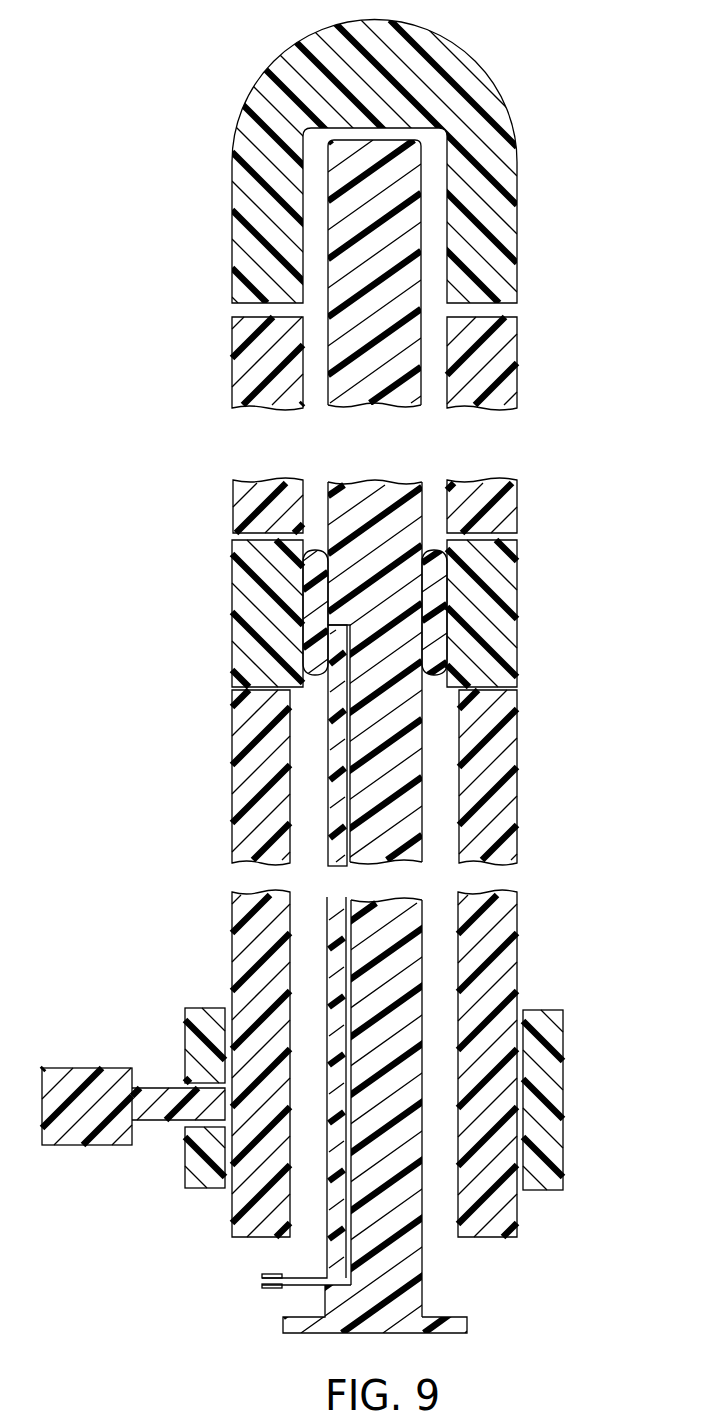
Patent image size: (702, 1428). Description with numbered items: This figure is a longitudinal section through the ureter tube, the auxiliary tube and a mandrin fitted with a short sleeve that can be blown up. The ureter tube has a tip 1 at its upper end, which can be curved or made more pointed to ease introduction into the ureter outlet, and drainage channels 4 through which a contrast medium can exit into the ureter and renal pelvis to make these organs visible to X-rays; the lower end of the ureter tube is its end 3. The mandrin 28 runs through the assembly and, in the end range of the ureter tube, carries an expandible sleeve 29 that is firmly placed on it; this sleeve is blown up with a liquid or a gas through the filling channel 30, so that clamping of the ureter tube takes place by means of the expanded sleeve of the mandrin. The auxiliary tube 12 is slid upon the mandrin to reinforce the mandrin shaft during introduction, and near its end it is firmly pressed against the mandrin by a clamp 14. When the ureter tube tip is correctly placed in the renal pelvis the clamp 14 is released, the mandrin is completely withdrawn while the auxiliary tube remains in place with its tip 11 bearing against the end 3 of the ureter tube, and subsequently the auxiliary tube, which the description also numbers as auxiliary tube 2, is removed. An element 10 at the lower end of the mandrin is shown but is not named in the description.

The ureter tube tip 1 is at (397, 17).
The auxiliary tube 2 is at (232, 352).
The end of the ureter tube 3 is at (232, 595).
The drainage channels 4 is at (508, 312).
The base plate 10 is at (463, 1328).
The tip of the auxiliary tube 11 is at (485, 708).
The auxiliary tube 12 is at (250, 826).
The clamp 14 is at (184, 1027).
The mandrin 28 is at (412, 227).
The expandible sleeve 29 is at (457, 613).
The filling channel 30 is at (262, 1277).